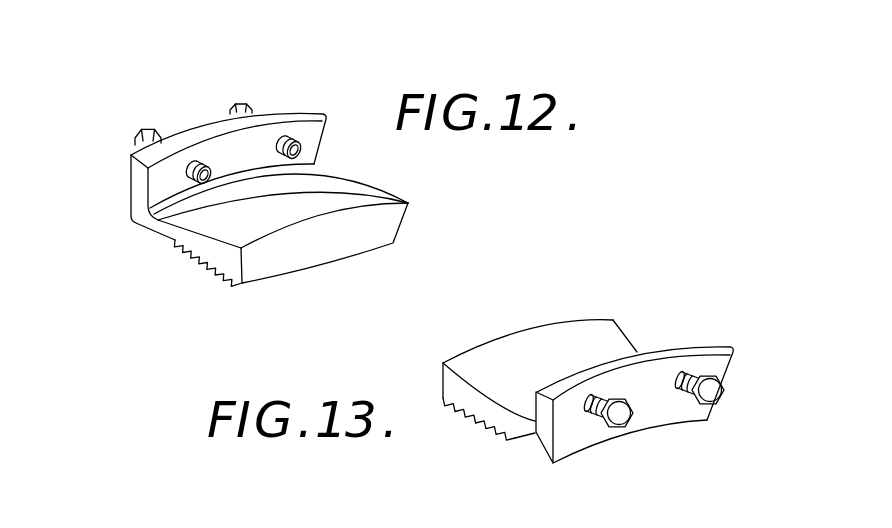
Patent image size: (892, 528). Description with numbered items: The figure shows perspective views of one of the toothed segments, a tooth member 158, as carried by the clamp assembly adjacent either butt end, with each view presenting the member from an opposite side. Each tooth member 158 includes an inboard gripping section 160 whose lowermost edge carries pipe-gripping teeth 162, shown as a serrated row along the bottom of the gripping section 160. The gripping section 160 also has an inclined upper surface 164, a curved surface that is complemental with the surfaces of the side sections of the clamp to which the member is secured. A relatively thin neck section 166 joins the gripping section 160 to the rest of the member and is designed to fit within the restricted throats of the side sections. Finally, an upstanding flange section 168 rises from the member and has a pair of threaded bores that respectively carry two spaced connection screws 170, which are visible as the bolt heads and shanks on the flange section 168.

In FIG. 12, the tooth member 158 is at (128, 172).
In FIG. 13, the tooth member 158 is at (627, 313).
In FIG. 12, the inboard gripping section 160 is at (324, 236).
In FIG. 13, the inboard gripping section 160 is at (450, 383).
In FIG. 12, the pipe-gripping teeth 162 is at (212, 262).
In FIG. 13, the pipe-gripping teeth 162 is at (480, 418).
In FIG. 12, the inclined upper surface 164 is at (336, 198).
In FIG. 13, the inclined upper surface 164 is at (535, 342).
In FIG. 12, the neck section 166 is at (157, 227).
In FIG. 13, the neck section 166 is at (523, 438).
In FIG. 12, the upstanding flange section 168 is at (292, 111).
In FIG. 13, the upstanding flange section 168 is at (716, 347).
In FIG. 12, the connection screws 170 is at (240, 103).
In FIG. 13, the connection screws 170 is at (722, 394).